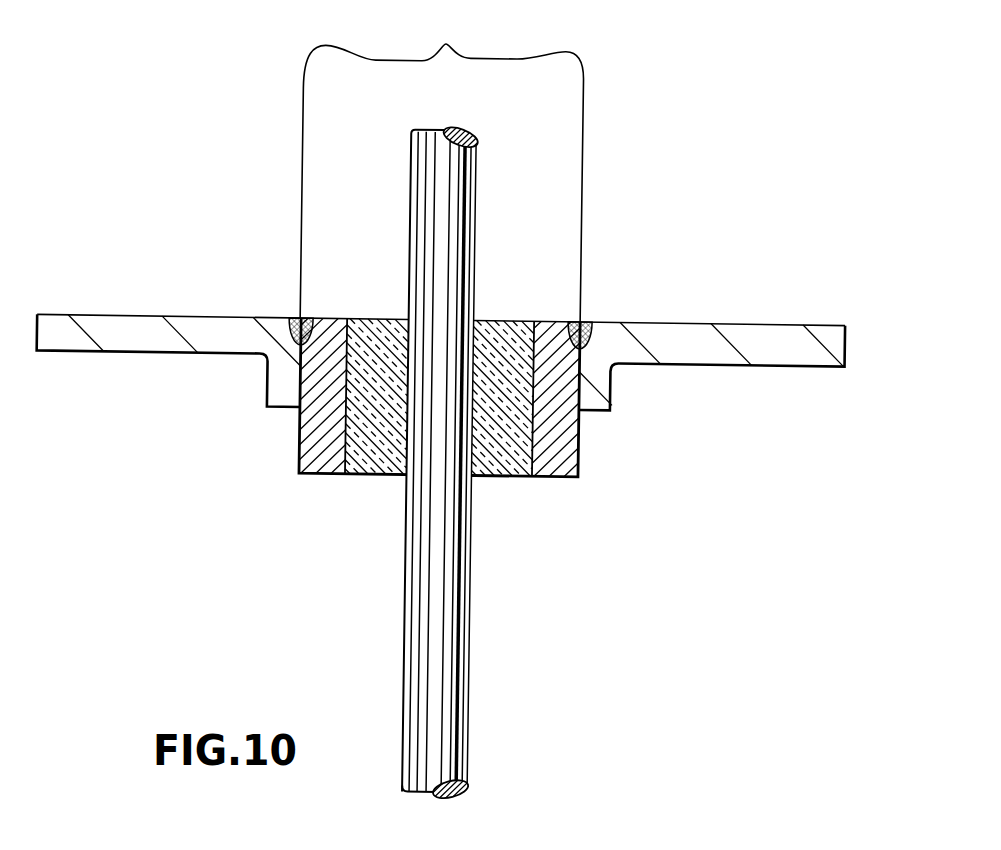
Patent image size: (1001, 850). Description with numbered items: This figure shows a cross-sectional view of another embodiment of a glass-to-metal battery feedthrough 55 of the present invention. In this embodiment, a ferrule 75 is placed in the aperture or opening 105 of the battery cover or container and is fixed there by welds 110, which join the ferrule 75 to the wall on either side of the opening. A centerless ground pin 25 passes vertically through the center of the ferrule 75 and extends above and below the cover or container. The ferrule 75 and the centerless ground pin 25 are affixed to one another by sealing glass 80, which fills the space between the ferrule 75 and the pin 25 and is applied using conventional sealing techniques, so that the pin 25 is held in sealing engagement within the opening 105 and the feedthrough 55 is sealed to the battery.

The feedthrough 55 is at (226, 124).
The aperture or opening 105 is at (442, 169).
The centerless ground pin 25 is at (474, 141).
The welds 110 is at (298, 320).
The ferrule 75 is at (582, 443).
The sealing glass 80 is at (497, 465).